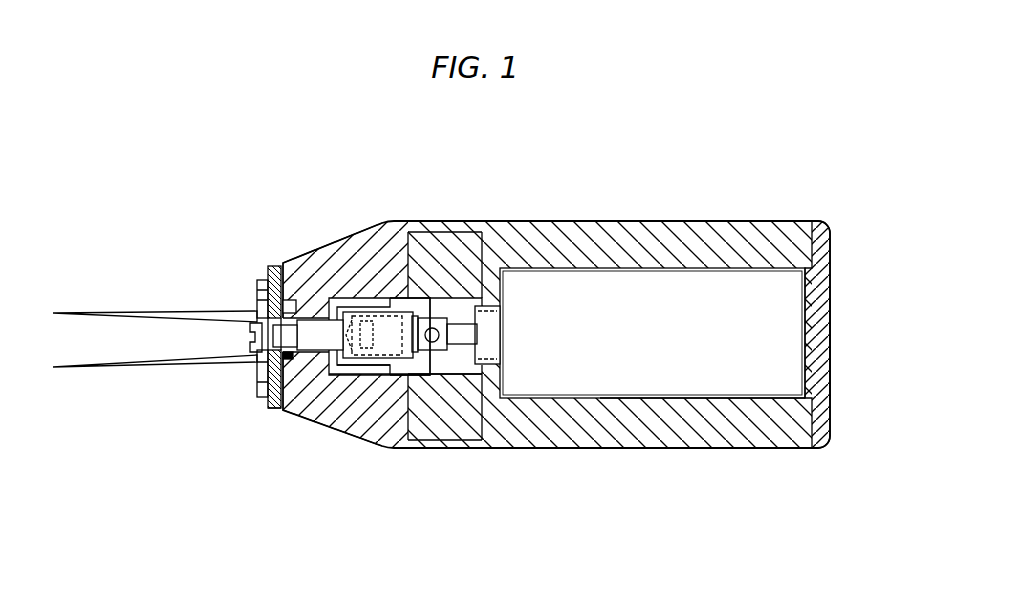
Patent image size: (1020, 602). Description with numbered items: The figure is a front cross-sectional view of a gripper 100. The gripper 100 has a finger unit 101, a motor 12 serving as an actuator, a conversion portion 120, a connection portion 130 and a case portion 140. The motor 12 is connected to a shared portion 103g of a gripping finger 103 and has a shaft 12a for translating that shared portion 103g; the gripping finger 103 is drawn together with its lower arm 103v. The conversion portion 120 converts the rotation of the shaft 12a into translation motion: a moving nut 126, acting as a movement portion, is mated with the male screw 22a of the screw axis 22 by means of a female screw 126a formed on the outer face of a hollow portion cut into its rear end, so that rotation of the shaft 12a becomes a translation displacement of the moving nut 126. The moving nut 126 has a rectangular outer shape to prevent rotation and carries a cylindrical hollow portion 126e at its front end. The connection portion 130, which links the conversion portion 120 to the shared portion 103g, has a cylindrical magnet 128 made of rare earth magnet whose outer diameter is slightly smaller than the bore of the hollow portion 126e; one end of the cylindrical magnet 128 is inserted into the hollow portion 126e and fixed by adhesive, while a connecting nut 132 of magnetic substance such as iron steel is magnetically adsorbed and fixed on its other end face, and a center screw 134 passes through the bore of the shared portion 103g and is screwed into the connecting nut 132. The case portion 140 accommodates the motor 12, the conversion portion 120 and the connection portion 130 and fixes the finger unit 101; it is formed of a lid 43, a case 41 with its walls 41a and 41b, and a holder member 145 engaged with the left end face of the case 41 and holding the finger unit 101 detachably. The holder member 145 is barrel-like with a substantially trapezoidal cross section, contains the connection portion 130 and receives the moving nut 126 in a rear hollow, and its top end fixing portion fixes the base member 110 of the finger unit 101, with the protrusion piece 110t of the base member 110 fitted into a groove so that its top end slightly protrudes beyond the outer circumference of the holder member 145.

The gripper 100 is at (620, 165).
The finger unit 101 is at (181, 300).
The gripping finger 103 is at (131, 312).
The lower probe arm 103v is at (150, 367).
The shared portion 103g is at (256, 300).
The base member 110 is at (277, 265).
The protrusion piece 110t is at (268, 407).
The motor 12 is at (718, 272).
The shaft 12a is at (463, 345).
The conversion portion 120 is at (373, 290).
The moving nut 126 is at (352, 373).
The female screw 126a is at (378, 376).
The cylindrical hollow portion 126e is at (331, 367).
The cylindrical magnet 128 is at (312, 351).
The connection portion 130 is at (283, 410).
The connecting nut 132 is at (289, 300).
The center screw 134 is at (250, 348).
The case portion 140 is at (804, 458).
The holder member 145 is at (357, 235).
The screw axis 22 is at (432, 233).
The male screw 22a is at (402, 375).
The case 41 is at (763, 220).
The housing bottom wall 41a is at (733, 399).
The housing inner wall 41b is at (468, 297).
The lid 43 is at (832, 350).